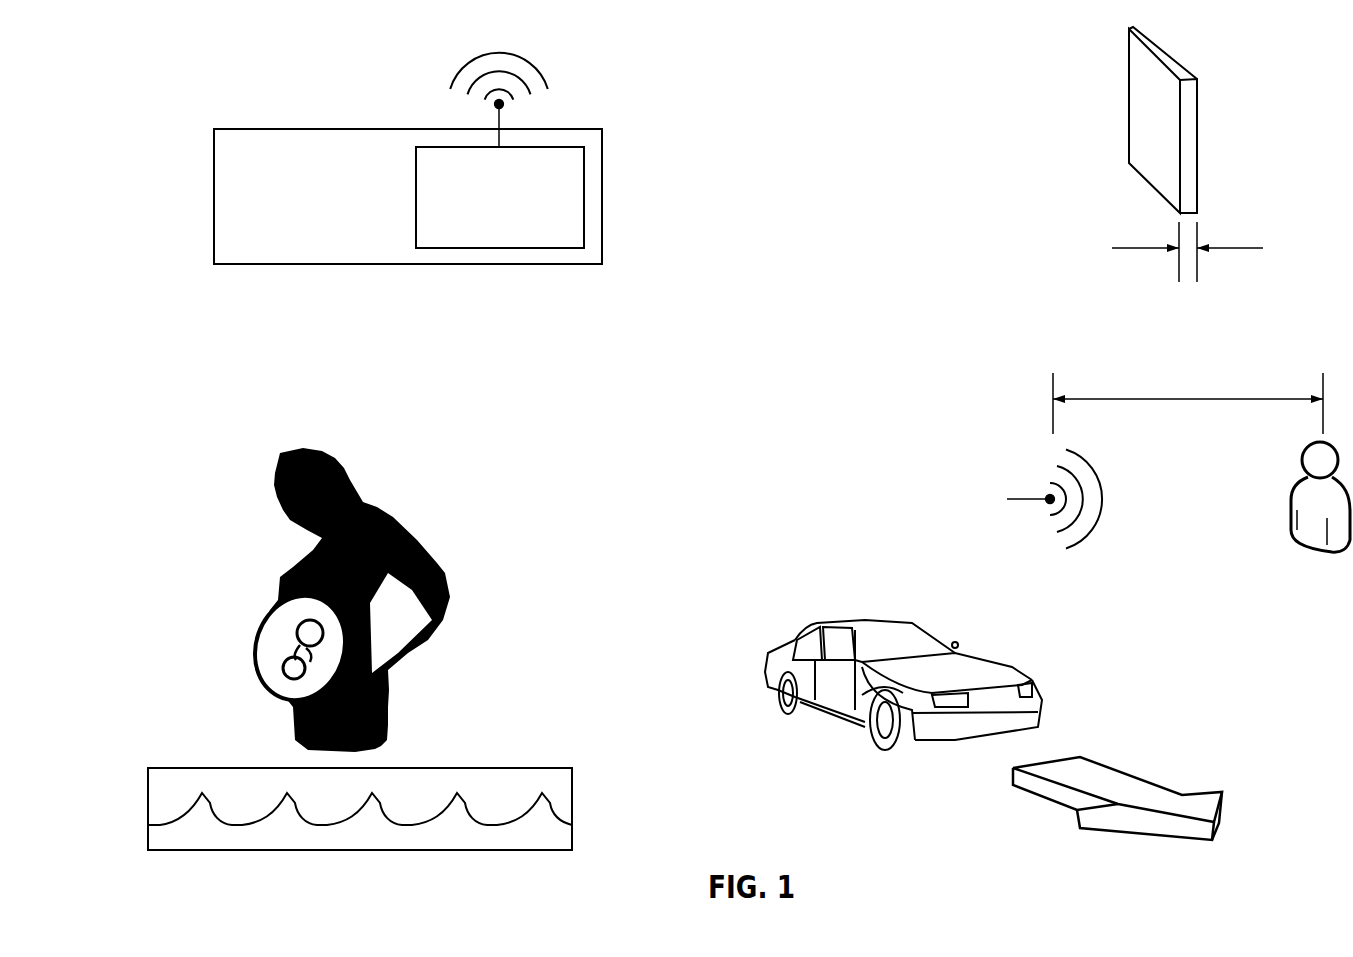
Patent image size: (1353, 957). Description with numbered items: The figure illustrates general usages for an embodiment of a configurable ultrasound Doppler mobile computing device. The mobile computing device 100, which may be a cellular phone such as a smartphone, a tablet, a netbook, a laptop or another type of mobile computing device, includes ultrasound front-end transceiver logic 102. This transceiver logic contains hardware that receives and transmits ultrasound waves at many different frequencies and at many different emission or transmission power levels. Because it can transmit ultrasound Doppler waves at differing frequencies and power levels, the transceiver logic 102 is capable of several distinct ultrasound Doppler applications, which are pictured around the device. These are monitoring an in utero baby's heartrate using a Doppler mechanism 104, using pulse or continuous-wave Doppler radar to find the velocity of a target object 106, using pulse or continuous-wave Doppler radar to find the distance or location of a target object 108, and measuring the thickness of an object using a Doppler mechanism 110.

The mobile computing device 100 is at (408, 196).
The ultrasound front-end transceiver logic 102 is at (500, 150).
The in utero baby heartrate monitoring application 104 is at (312, 600).
The target object velocity-finding application 106 is at (903, 715).
The target object distance/location-finding application 108 is at (1178, 462).
The object thickness measurement application 110 is at (1198, 154).